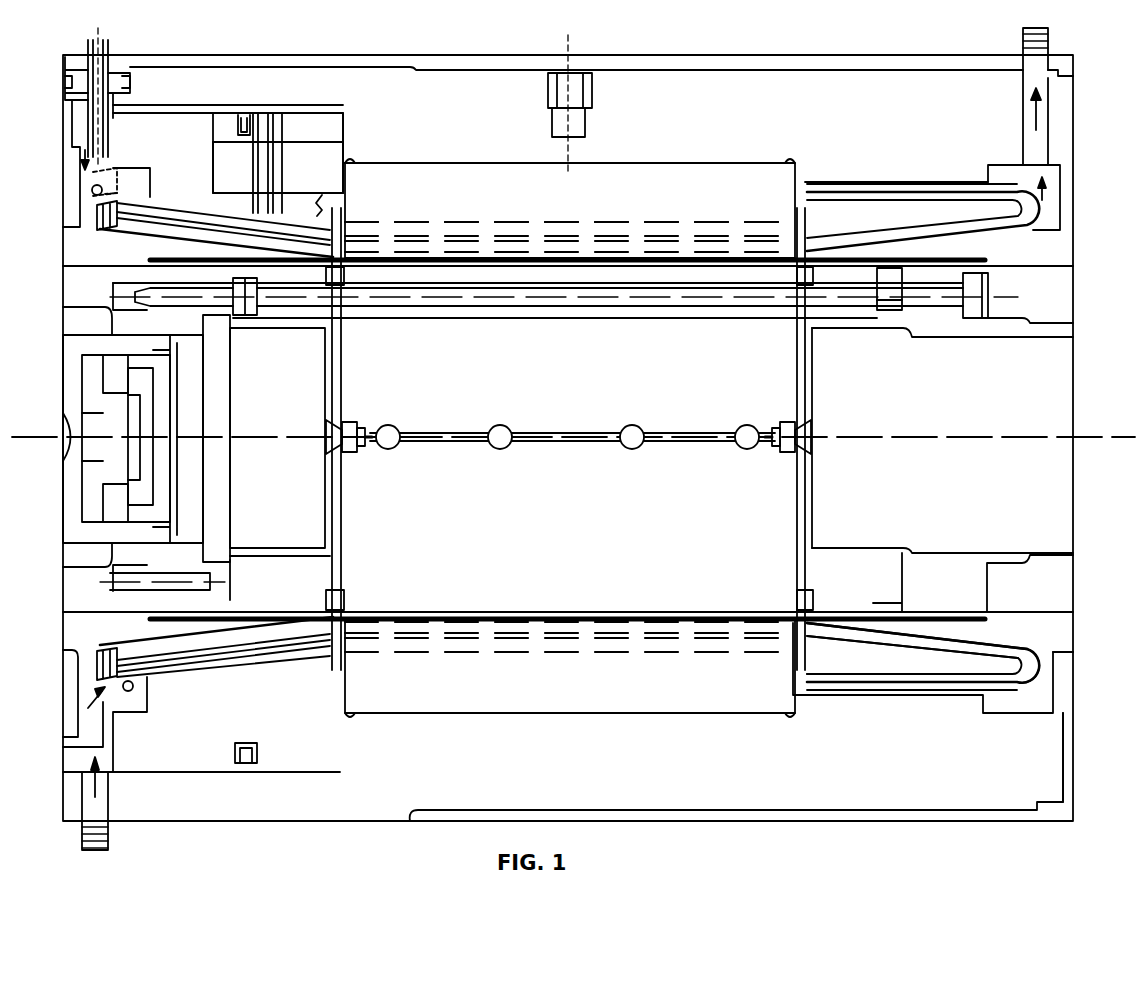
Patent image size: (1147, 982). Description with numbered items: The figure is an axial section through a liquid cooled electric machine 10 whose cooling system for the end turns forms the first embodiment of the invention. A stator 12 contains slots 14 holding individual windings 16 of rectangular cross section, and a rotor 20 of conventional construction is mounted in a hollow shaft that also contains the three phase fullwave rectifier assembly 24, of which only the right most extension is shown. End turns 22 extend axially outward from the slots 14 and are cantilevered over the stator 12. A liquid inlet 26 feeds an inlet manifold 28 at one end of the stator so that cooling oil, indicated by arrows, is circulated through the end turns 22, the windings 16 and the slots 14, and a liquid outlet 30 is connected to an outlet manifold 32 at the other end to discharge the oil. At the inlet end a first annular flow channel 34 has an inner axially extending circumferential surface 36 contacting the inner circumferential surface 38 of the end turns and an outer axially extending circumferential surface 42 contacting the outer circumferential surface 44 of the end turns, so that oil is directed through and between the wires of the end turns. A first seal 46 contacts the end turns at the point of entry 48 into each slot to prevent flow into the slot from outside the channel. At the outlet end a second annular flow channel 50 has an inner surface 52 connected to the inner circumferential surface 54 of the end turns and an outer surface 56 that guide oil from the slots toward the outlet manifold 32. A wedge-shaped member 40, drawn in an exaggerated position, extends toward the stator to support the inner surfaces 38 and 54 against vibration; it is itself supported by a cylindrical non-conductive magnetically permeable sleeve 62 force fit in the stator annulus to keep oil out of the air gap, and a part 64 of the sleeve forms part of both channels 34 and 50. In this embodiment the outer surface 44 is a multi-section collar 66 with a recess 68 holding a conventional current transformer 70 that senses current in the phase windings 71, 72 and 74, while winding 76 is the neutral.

The filter apparatus 10 is at (672, 41).
The stator 12 is at (543, 198).
The slots 14 is at (410, 210).
The windings 16 is at (648, 237).
The rotor 20 is at (581, 372).
The end turns 22 is at (206, 203).
The three phase fullwave rectifier assembly 24 is at (63, 375).
The liquid inlet 26 is at (82, 803).
The inlet manifold 28 is at (67, 746).
The liquid outlet 30 is at (1050, 50).
The outlet manifold 32 is at (1050, 195).
The first annular flow channel 34 is at (200, 660).
The inner axially extending circumferential surface 36 is at (127, 642).
The inner axially extending circumferential surface of the end turns 38 is at (168, 665).
The wedge-shaped member 40 is at (97, 224).
The outer axially extending circumferential surface 42 is at (235, 667).
The outer axially extending circumferential surface of the end turns 44 is at (287, 663).
The first seal 46 is at (343, 158).
The point of entry 48 is at (322, 195).
The second annular flow channel 50 is at (930, 658).
The inner axially extending circumferential surface 52 is at (1002, 643).
The inner axially extending circumferential surface of the end turns 54 is at (985, 650).
The outer axially extending circumferential surface 56 is at (966, 668).
The cylindrical non-conductive magnetically permeable sleeve 62 is at (482, 252).
The part of the sleeve 64 is at (65, 303).
The collar 66 is at (318, 749).
The recess 68 is at (213, 168).
The current transformer 70 is at (322, 184).
The phase winding 71 is at (82, 168).
The phase winding 72 is at (98, 178).
The phase winding 74 is at (100, 200).
The neutral winding 76 is at (91, 190).